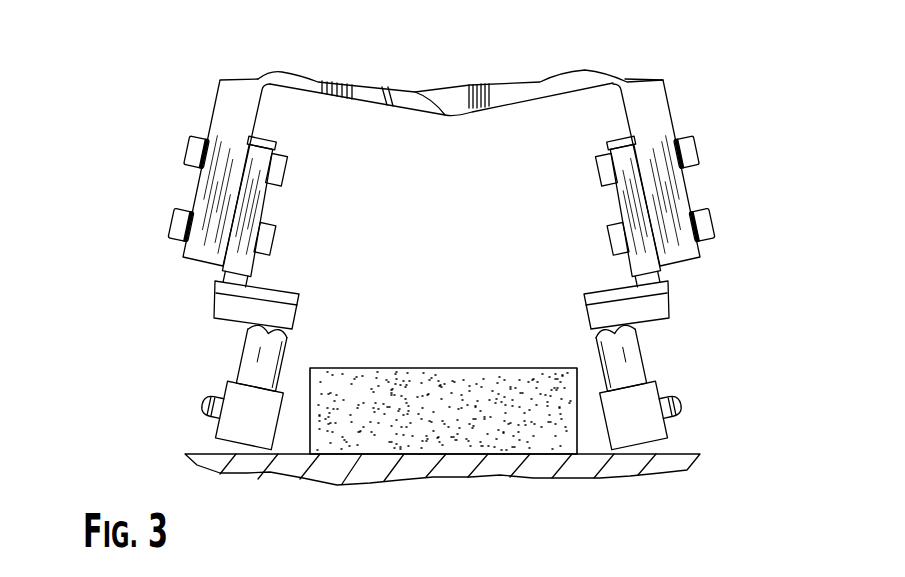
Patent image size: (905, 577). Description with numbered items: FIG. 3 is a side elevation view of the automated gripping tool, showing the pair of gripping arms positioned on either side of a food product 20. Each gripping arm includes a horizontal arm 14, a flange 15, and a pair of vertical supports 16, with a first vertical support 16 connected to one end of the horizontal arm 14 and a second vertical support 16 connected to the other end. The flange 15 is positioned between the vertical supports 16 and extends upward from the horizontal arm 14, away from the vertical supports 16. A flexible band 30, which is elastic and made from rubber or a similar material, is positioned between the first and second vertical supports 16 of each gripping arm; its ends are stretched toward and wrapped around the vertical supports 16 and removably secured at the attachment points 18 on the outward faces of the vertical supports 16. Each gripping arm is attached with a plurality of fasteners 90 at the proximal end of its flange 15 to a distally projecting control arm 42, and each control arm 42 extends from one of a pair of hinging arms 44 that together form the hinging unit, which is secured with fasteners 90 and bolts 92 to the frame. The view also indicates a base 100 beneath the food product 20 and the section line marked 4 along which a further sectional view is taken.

The horizontal arm 14 is at (228, 298).
The flange 15 is at (244, 261).
The vertical support 16 is at (248, 352).
The attachment point 18 is at (208, 410).
The food product 20 is at (483, 440).
The flexible band 30 is at (232, 433).
The control arm 42 is at (222, 108).
The hinging arm 44 is at (495, 87).
The fastener 90 is at (276, 232).
The bolt 92 is at (190, 150).
The base support 100 is at (325, 471).
The section line 4- 4 is at (162, 368).